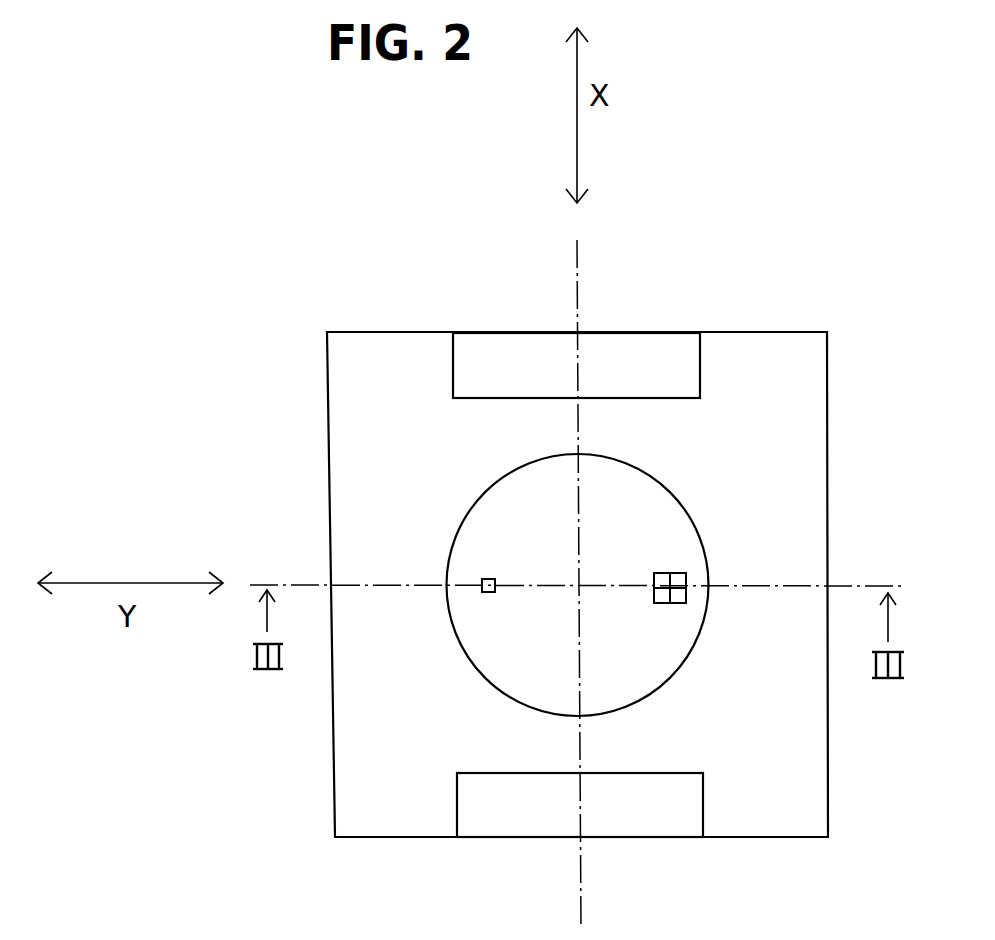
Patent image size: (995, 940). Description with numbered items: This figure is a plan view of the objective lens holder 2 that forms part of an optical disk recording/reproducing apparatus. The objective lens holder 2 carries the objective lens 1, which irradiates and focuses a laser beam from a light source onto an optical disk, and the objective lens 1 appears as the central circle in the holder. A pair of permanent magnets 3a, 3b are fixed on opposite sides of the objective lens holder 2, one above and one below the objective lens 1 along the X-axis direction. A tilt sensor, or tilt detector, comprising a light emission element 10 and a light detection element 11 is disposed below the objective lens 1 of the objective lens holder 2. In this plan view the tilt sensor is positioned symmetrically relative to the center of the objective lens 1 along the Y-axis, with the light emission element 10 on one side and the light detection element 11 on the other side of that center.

The objective lens 1 is at (677, 502).
The objective lens holder 2 is at (812, 794).
The permanent magnet 3a is at (648, 350).
The permanent magnet 3b is at (665, 835).
The light emission element 10 is at (484, 593).
The light detection element 11 is at (683, 581).